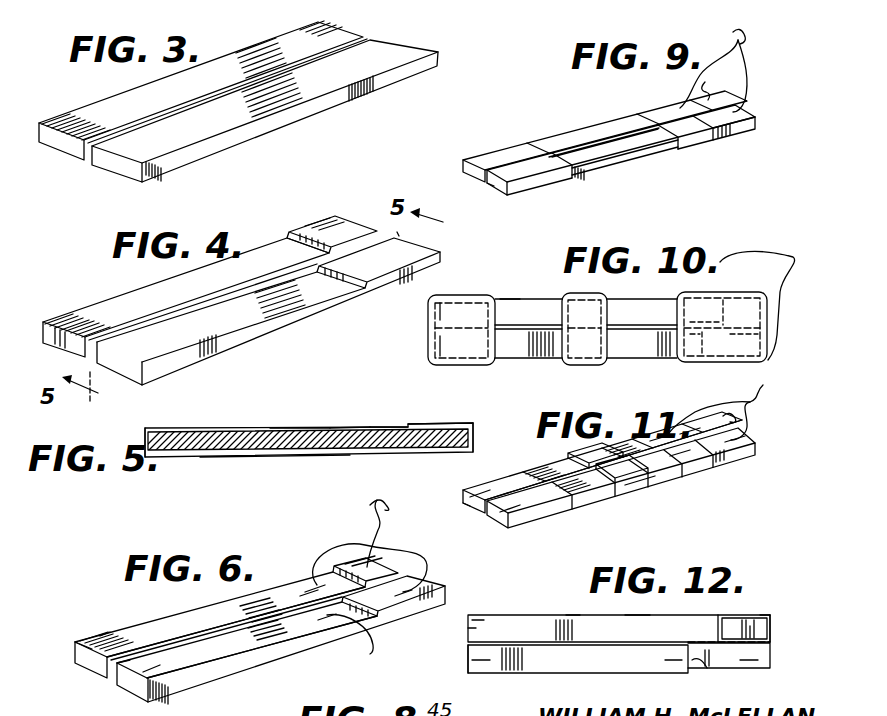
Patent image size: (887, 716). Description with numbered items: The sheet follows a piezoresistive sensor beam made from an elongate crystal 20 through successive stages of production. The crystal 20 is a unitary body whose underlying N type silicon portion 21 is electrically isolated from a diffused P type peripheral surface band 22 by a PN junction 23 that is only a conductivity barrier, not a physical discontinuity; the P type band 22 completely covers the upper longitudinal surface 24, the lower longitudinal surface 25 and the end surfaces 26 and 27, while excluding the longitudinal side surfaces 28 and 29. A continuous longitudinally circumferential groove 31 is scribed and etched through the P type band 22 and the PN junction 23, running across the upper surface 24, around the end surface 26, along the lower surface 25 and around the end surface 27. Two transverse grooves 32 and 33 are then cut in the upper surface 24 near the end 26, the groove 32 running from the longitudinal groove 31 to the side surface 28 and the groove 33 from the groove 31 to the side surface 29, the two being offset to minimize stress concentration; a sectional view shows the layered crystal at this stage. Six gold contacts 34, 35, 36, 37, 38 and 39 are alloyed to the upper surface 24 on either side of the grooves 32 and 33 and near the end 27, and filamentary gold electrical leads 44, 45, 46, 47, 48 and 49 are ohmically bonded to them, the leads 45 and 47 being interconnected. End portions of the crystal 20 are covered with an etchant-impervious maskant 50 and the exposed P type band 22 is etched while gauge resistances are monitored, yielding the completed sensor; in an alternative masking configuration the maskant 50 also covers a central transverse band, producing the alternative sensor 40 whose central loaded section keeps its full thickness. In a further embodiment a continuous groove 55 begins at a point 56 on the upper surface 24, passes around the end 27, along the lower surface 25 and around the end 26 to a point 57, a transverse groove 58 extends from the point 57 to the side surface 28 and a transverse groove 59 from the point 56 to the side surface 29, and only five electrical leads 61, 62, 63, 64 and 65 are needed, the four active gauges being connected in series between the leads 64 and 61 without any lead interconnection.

In FIG. 3, the crystal 20 is at (94, 87).
In FIG. 6, the crystal 20 is at (174, 602).
In FIG. 9, the crystal 20 is at (565, 121).
In FIG. 11, the crystal 20 is at (609, 470).
In FIG. 12, the crystal 20 is at (572, 620).
In FIG. 5, the N type silicon portion 21 is at (378, 437).
In FIG. 5, the P type peripheral surface band 22 is at (340, 427).
In FIG. 5, the PN junction 23 is at (293, 427).
In FIG. 3, the upper longitudinal surface 24 is at (333, 33).
In FIG. 4, the upper longitudinal surface 24 is at (120, 300).
In FIG. 5, the upper longitudinal surface 24 is at (230, 427).
In FIG. 6, the upper longitudinal surface 24 is at (142, 631).
In FIG. 9, the upper longitudinal surface 24 is at (605, 143).
In FIG. 10, the upper longitudinal surface 24 is at (660, 324).
In FIG. 11, the upper longitudinal surface 24 is at (636, 476).
In FIG. 12, the upper longitudinal surface 24 is at (619, 628).
In FIG. 5, the lower longitudinal surface 25 is at (277, 457).
In FIG. 5, the end surface 26 is at (473, 440).
In FIG. 12, the end surface 26 is at (770, 630).
In FIG. 3, the end surface 27 is at (134, 168).
In FIG. 4, the end surface 27 is at (72, 351).
In FIG. 5, the end surface 27 is at (145, 436).
In FIG. 6, the end surface 27 is at (90, 663).
In FIG. 9, the end surface 27 is at (498, 190).
In FIG. 11, the end surface 27 is at (470, 504).
In FIG. 12, the end surface 27 is at (468, 657).
In FIG. 10, the longitudinal side surface 28 is at (528, 292).
In FIG. 12, the longitudinal side surface 28 is at (636, 613).
In FIG. 3, the longitudinal side surface 29 is at (428, 68).
In FIG. 4, the longitudinal side surface 29 is at (198, 355).
In FIG. 6, the longitudinal side surface 29 is at (446, 594).
In FIG. 9, the longitudinal side surface 29 is at (562, 175).
In FIG. 10, the longitudinal side surface 29 is at (535, 357).
In FIG. 12, the longitudinal side surface 29 is at (590, 675).
In FIG. 3, the longitudinally circumferential groove 31 is at (378, 42).
In FIG. 4, the longitudinally circumferential groove 31 is at (200, 305).
In FIG. 6, the longitudinally circumferential groove 31 is at (227, 628).
In FIG. 9, the longitudinally circumferential groove 31 is at (600, 140).
In FIG. 10, the longitudinally circumferential groove 31 is at (521, 331).
In FIG. 11, the longitudinally circumferential groove 31 is at (514, 481).
In FIG. 4, the transverse groove 32 is at (300, 237).
In FIG. 5, the transverse groove 32 is at (407, 427).
In FIG. 6, the transverse groove 32 is at (328, 570).
In FIG. 9, the transverse groove 32 is at (703, 72).
In FIG. 11, the transverse groove 32 is at (676, 424).
In FIG. 4, the transverse groove 33 is at (363, 287).
In FIG. 6, the transverse groove 33 is at (368, 615).
In FIG. 9, the transverse groove 33 is at (727, 130).
In FIG. 11, the transverse groove 33 is at (718, 460).
In FIG. 6, the gold contact 34 is at (360, 567).
In FIG. 6, the gold contact 35 is at (307, 587).
In FIG. 6, the gold contact 36 is at (112, 643).
In FIG. 6, the gold contact 37 is at (442, 598).
In FIG. 6, the gold contact 38 is at (327, 617).
In FIG. 6, the gold contact 39 is at (143, 672).
In FIG. 11, the alternative piezoresistive sensor embodiment 40 is at (566, 453).
In FIG. 6, the electrical lead 44 is at (395, 555).
In FIG. 9, the electrical lead 44 is at (715, 98).
In FIG. 10, the electrical lead 44 is at (740, 307).
In FIG. 11, the electrical lead 44 is at (738, 417).
In FIG. 6, the electrical lead 45 is at (317, 585).
In FIG. 9, the electrical lead 45 is at (678, 107).
In FIG. 10, the electrical lead 45 is at (703, 310).
In FIG. 11, the electrical lead 45 is at (660, 437).
In FIG. 6, the electrical lead 46 is at (118, 637).
In FIG. 9, the electrical lead 46 is at (485, 162).
In FIG. 10, the electrical lead 46 is at (447, 315).
In FIG. 11, the electrical lead 46 is at (420, 490).
In FIG. 6, the electrical lead 47 is at (403, 592).
In FIG. 9, the electrical lead 47 is at (731, 112).
In FIG. 10, the electrical lead 47 is at (742, 342).
In FIG. 11, the electrical lead 47 is at (733, 438).
In FIG. 6, the electrical lead 48 is at (365, 658).
In FIG. 9, the electrical lead 48 is at (683, 128).
In FIG. 10, the electrical lead 48 is at (687, 343).
In FIG. 11, the electrical lead 48 is at (678, 455).
In FIG. 6, the electrical lead 49 is at (153, 667).
In FIG. 9, the electrical lead 49 is at (510, 176).
In FIG. 10, the electrical lead 49 is at (447, 343).
In FIG. 11, the electrical lead 49 is at (512, 507).
In FIG. 10, the maskant 50 is at (498, 277).
In FIG. 12, the continuous groove 55 is at (547, 640).
In FIG. 12, the point 56 is at (686, 640).
In FIG. 12, the point 57 is at (750, 623).
In FIG. 12, the transverse groove 58 is at (737, 585).
In FIG. 12, the transverse groove 59 is at (707, 668).
In FIG. 12, the electrical lead 61 is at (757, 594).
In FIG. 12, the electrical lead 62 is at (478, 630).
In FIG. 12, the electrical lead 63 is at (747, 657).
In FIG. 12, the electrical lead 64 is at (673, 657).
In FIG. 12, the electrical lead 65 is at (478, 658).